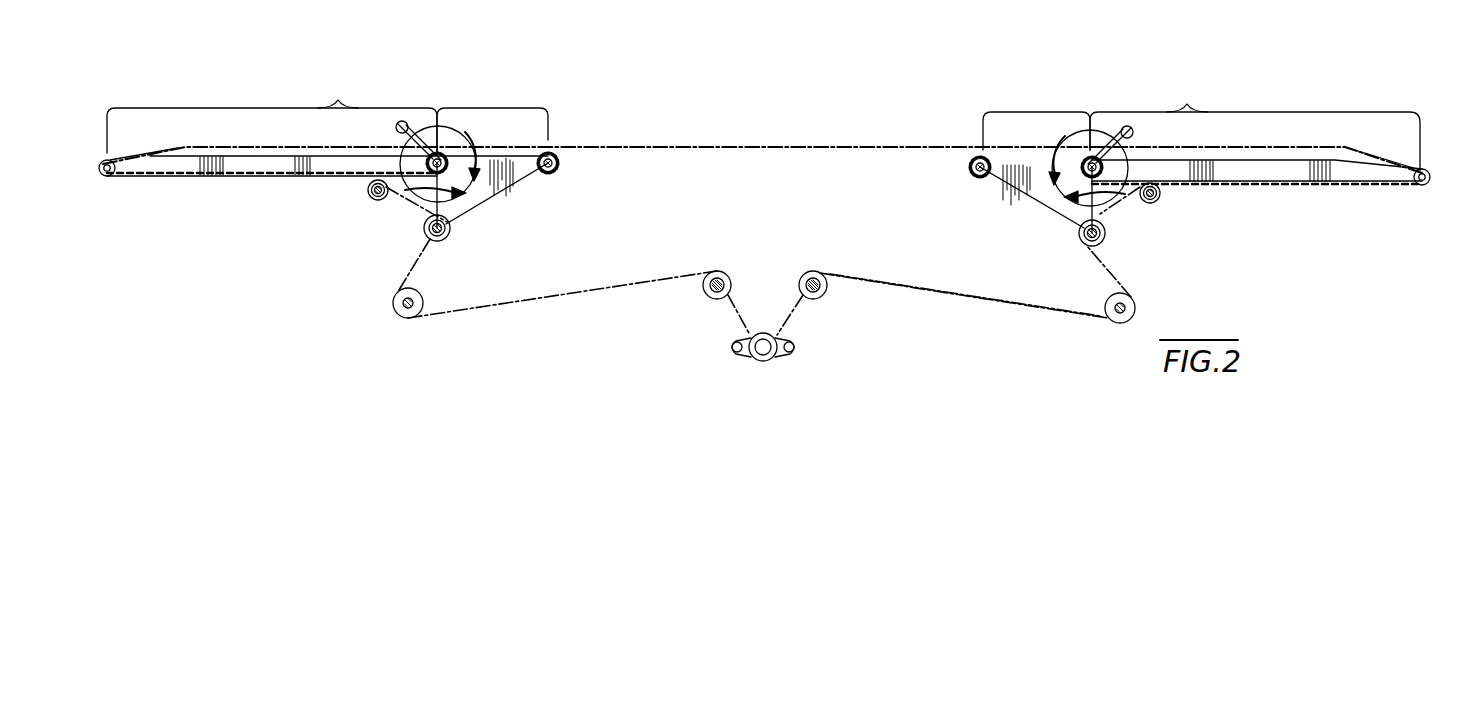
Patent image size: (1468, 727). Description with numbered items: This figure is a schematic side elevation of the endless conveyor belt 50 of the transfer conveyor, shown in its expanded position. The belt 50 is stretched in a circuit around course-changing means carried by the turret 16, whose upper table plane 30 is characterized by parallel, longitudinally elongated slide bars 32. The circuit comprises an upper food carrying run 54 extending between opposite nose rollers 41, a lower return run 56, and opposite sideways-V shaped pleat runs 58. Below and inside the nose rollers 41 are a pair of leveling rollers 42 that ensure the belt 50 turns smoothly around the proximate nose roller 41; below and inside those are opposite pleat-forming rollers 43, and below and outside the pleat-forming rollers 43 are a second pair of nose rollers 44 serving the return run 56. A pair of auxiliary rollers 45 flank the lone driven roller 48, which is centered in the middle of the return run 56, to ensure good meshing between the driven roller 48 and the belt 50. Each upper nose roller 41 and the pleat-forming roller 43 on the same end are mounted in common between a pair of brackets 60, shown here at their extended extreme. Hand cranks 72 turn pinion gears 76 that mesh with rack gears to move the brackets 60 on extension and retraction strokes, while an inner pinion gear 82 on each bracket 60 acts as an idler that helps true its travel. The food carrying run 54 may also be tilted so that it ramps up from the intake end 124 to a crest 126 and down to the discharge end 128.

The turret 16 is at (1045, 208).
The table plane 30 is at (1245, 152).
The slide bars 32 is at (1305, 160).
The nose rollers 41 is at (1426, 186).
The leveling rollers 42 is at (1151, 203).
The pleat-forming rollers 43 is at (446, 233).
The second nose rollers 44 is at (402, 312).
The auxiliary rollers 45 is at (706, 291).
The driven roller 48 is at (770, 359).
The endless conveyor belt 50 is at (762, 119).
The food carrying run 54 is at (752, 147).
The return run 56 is at (947, 298).
The pleat runs 58 is at (1117, 274).
The brackets 60 is at (448, 183).
The hand cranks 72 is at (1128, 128).
The pinion gears 76 is at (437, 160).
The inner pinion gear 82 is at (555, 169).
The intake end 124 is at (136, 150).
The crest 126 is at (247, 148).
The discharge end 128 is at (1398, 162).